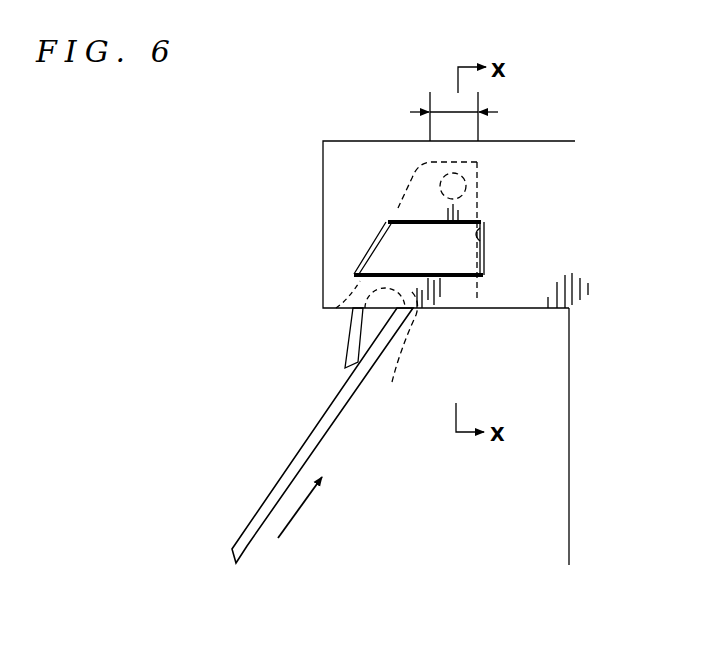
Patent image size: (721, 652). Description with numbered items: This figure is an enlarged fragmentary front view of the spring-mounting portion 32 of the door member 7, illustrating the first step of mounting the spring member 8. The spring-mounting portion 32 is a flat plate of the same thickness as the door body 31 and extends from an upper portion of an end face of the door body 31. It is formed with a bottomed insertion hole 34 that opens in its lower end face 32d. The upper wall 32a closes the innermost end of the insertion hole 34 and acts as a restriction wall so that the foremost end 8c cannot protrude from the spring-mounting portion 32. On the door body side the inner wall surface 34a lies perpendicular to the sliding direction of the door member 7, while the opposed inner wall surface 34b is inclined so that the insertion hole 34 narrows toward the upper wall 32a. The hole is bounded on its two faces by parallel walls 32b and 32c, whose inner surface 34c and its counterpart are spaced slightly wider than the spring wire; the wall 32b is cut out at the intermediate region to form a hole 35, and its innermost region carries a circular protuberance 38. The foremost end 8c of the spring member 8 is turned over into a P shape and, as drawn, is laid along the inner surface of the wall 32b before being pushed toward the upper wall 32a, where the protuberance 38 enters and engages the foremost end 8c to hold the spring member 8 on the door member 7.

The door member 7 is at (615, 101).
The spring member 8 is at (286, 470).
The foremost end of the spring member 8c is at (353, 335).
The door body 31 is at (569, 511).
The spring-mounting portion 32 is at (504, 141).
The upper wall 32a is at (440, 111).
The wall on one-surface side 32b is at (451, 296).
The wall on the other-surface side 32c is at (407, 248).
The lower end face 32d is at (487, 312).
The insertion hole 34 is at (472, 310).
The inner wall surface 34a is at (482, 221).
The inner wall surface 34b is at (406, 181).
The inner surface 34c is at (396, 350).
The hole 35 is at (461, 252).
The protuberance 38 is at (464, 181).